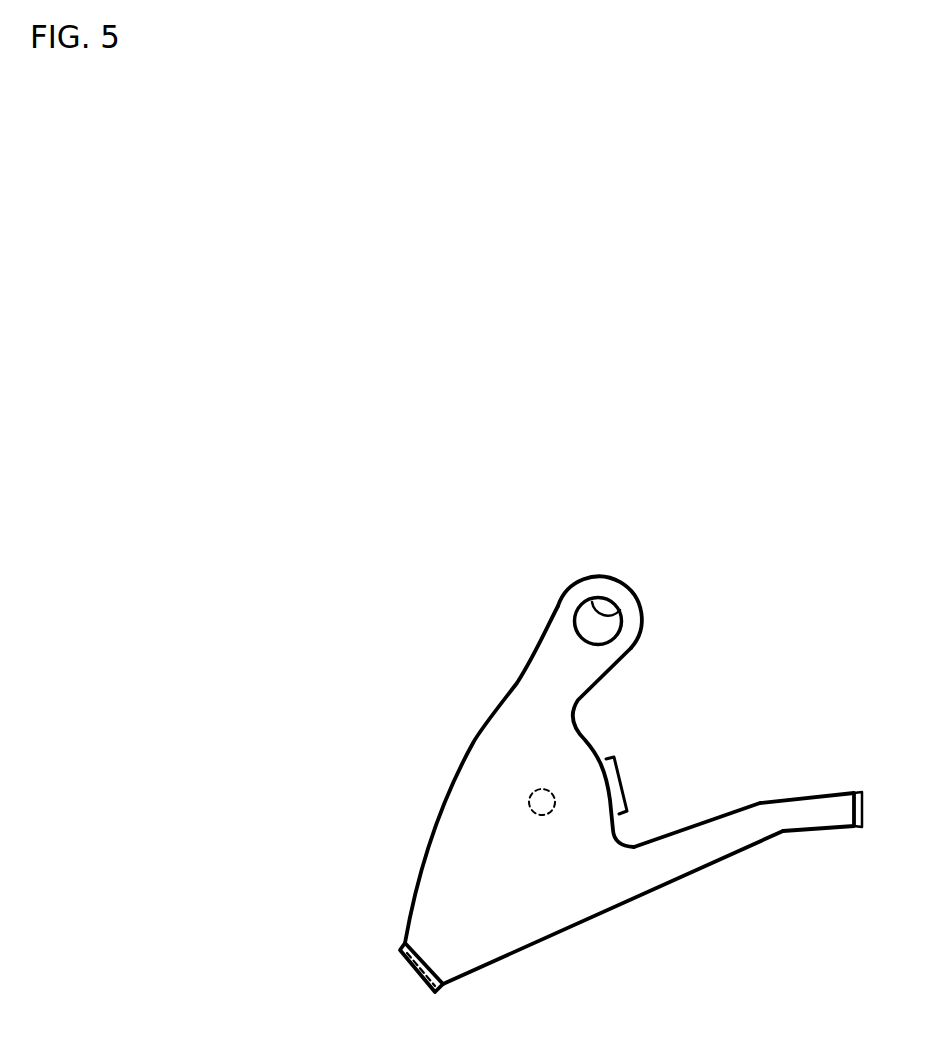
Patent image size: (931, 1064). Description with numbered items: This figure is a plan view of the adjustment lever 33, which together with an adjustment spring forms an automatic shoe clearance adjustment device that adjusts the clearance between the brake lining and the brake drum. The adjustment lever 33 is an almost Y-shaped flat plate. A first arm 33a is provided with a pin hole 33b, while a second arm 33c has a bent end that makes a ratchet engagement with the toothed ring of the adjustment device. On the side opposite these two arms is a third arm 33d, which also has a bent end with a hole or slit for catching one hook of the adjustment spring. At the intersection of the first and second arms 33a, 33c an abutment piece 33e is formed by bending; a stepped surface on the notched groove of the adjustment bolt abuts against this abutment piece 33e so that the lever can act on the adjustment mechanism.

The adjustment lever 33 is at (472, 743).
The first arm 33a is at (629, 645).
The pin hole 33b is at (621, 609).
The second arm 33c is at (823, 825).
The third arm 33d is at (402, 948).
The abutment piece 33e is at (620, 790).